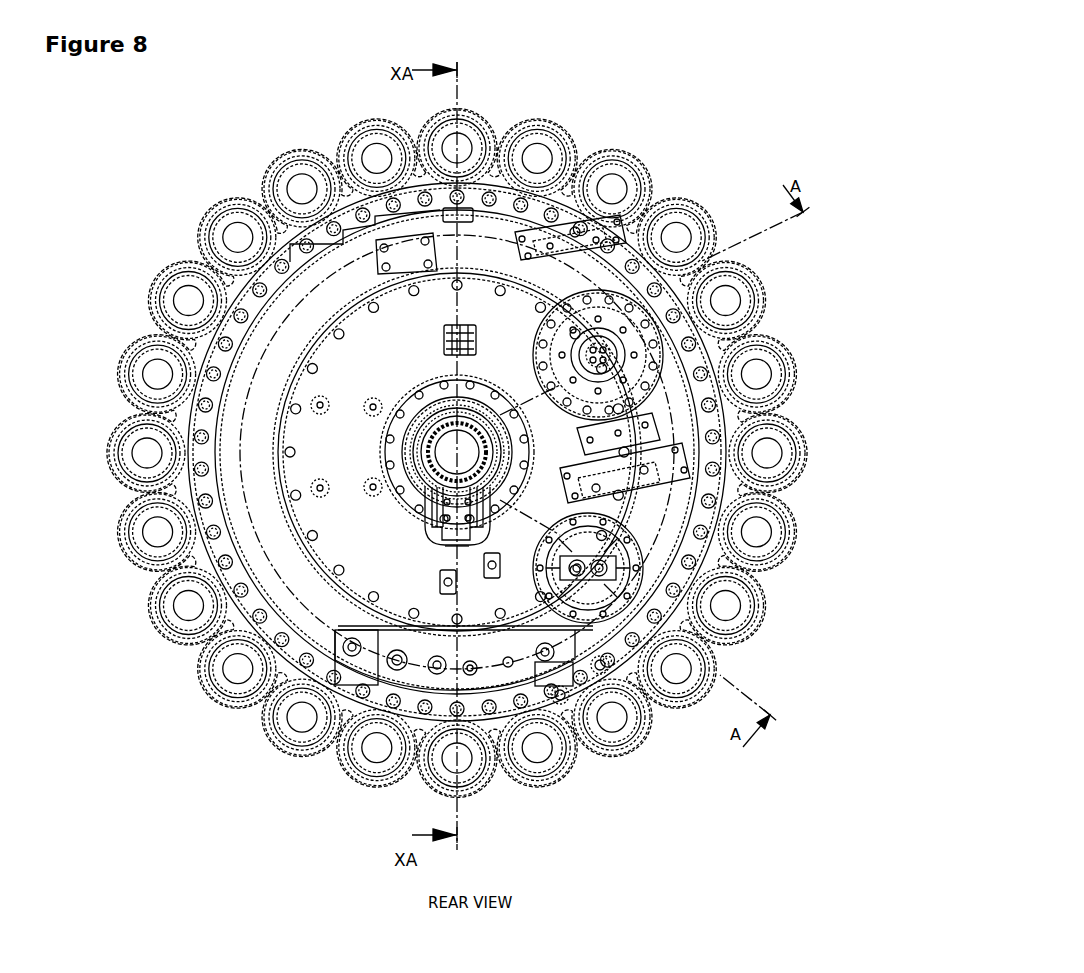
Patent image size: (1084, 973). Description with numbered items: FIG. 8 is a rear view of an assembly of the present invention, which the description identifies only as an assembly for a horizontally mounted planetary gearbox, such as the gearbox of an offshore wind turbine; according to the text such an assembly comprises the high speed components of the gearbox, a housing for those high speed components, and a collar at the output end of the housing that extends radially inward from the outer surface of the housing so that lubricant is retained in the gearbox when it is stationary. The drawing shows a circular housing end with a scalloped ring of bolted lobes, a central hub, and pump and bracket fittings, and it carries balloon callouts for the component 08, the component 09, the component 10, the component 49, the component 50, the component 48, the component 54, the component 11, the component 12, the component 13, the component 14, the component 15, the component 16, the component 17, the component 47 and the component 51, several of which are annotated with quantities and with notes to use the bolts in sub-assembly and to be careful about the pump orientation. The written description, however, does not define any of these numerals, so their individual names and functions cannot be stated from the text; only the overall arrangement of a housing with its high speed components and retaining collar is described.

The upper pump bracket 08 is at (610, 225).
The bracket bolt 09 is at (723, 155).
The pump mounting flange 10 is at (670, 310).
The flange bolt 49 is at (630, 330).
The flange washer 50 is at (743, 305).
The pump support plate 48 is at (640, 350).
The pump support bracket 54 is at (665, 415).
The bracket bolt 11 is at (655, 485).
The pump 12 is at (645, 585).
The pump bolt 13 is at (715, 568).
The bolt 14 is at (560, 695).
The washer 15 is at (722, 712).
The lower bracket 16 is at (430, 660).
The bracket bolt 17 is at (428, 755).
The housing bolt 47 is at (298, 637).
The bolt 51 is at (213, 428).